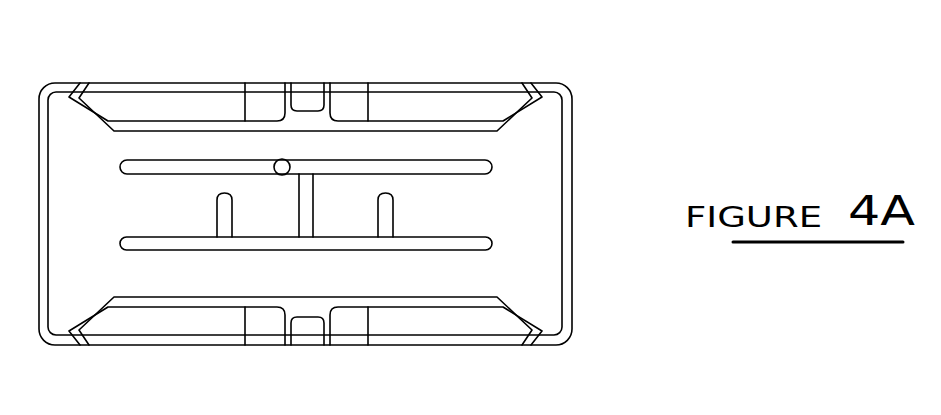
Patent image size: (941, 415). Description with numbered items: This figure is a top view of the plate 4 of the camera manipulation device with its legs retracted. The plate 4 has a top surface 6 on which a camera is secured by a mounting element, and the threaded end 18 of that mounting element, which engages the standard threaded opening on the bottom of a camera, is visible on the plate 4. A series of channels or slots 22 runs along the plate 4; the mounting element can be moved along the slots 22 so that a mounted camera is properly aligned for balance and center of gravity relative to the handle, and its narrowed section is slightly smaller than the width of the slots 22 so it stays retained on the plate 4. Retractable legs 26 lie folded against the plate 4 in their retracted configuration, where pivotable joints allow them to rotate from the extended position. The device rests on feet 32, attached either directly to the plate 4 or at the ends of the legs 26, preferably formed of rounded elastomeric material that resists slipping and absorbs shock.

The plate 4 is at (571, 276).
The top surface 6 is at (538, 200).
The threaded end 18 is at (285, 160).
The slots 22 is at (440, 163).
The retractable legs 26 is at (183, 93).
The feet 32 is at (267, 94).